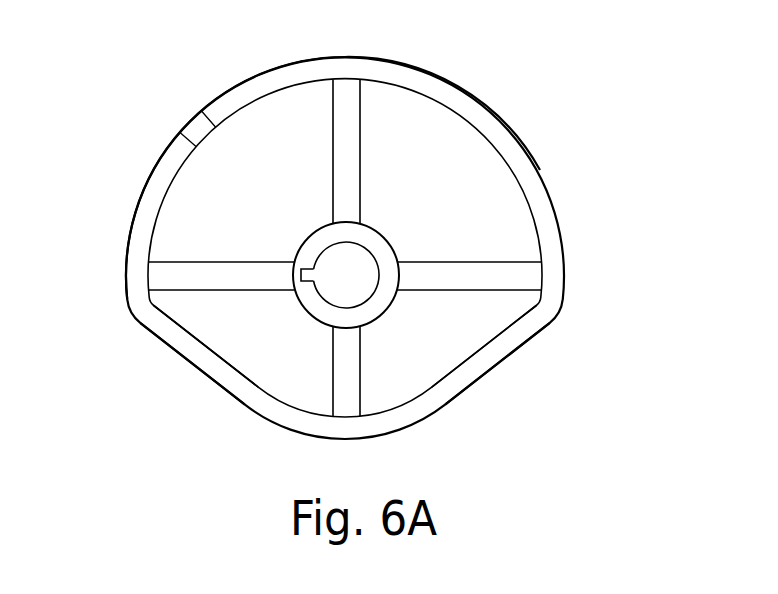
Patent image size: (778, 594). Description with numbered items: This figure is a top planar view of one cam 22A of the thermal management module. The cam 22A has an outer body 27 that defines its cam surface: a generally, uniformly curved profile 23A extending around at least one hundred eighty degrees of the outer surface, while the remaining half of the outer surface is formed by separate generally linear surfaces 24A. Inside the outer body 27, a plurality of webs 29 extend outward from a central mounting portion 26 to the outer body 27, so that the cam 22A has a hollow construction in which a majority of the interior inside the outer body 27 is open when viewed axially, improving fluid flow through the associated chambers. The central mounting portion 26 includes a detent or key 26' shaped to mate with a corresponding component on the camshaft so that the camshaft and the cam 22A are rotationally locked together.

The cam 22A is at (545, 213).
The uniformly curved profile 23A is at (478, 113).
The generally linear surfaces 24A is at (217, 368).
The central mounting portion 26 is at (447, 220).
The detent or key 26' is at (278, 379).
The outer body 27 is at (153, 188).
The webs 29 is at (255, 272).